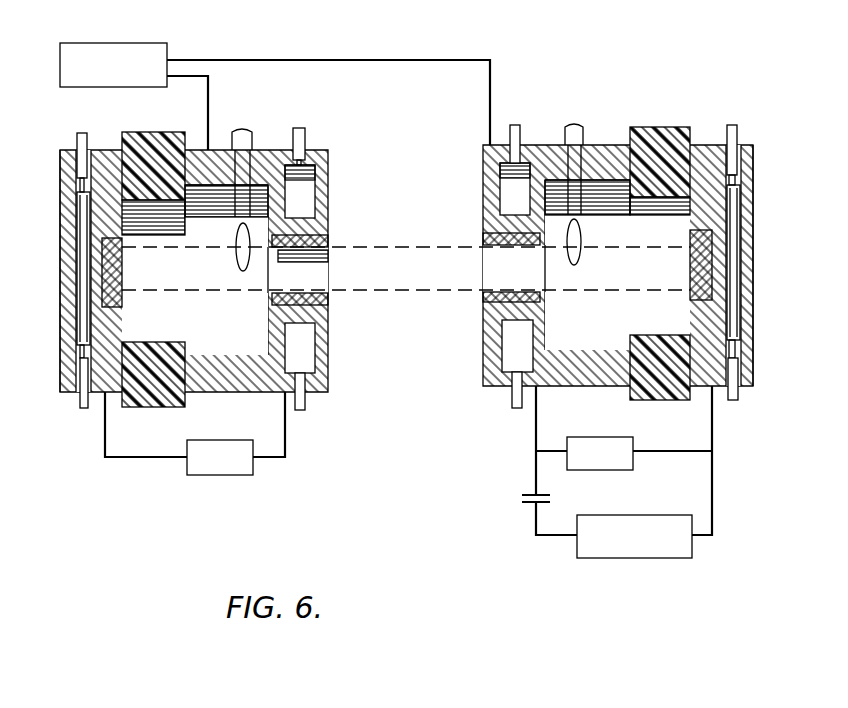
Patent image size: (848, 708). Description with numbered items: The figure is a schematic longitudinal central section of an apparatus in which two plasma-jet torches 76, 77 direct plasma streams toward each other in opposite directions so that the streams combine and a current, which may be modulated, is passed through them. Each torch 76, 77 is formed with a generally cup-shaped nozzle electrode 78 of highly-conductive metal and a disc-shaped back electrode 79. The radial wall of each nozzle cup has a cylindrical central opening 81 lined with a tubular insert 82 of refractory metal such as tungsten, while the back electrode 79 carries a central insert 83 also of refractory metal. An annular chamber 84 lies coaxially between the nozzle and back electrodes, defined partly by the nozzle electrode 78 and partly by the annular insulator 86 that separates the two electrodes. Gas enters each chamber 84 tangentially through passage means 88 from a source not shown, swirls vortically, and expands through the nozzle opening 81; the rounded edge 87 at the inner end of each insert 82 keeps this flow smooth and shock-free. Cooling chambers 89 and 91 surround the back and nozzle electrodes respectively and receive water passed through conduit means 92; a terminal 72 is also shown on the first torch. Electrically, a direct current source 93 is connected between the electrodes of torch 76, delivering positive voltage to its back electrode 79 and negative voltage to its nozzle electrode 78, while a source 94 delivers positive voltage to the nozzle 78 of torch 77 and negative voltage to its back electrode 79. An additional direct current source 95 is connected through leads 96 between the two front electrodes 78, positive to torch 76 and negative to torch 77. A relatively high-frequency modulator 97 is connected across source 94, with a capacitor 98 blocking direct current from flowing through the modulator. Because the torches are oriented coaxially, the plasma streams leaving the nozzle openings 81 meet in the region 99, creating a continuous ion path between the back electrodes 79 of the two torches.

The terminal pin 72 is at (301, 131).
The plasma torch 76 is at (331, 152).
The plasma torch 77 is at (599, 142).
The nozzle electrode 78 is at (319, 189).
The back electrode 79 is at (70, 363).
The central opening 81 is at (330, 281).
The tubular insert 82 is at (330, 299).
The central insert 83 is at (118, 273).
The annular chamber 84 is at (406, 285).
The annular insulator 86 is at (159, 402).
The rounded edge 87 is at (271, 296).
The tangential passage means 88 is at (267, 116).
The cooling chamber 89 is at (78, 273).
The cooling chamber 91 is at (303, 358).
The conduit means 92 is at (77, 141).
The direct current source 93 is at (237, 477).
The direct current source 94 is at (612, 470).
The direct current source 95 is at (100, 43).
The leads 96 is at (276, 62).
The modulator 97 is at (650, 558).
The capacitor 98 is at (522, 499).
The contact region 99 is at (395, 247).